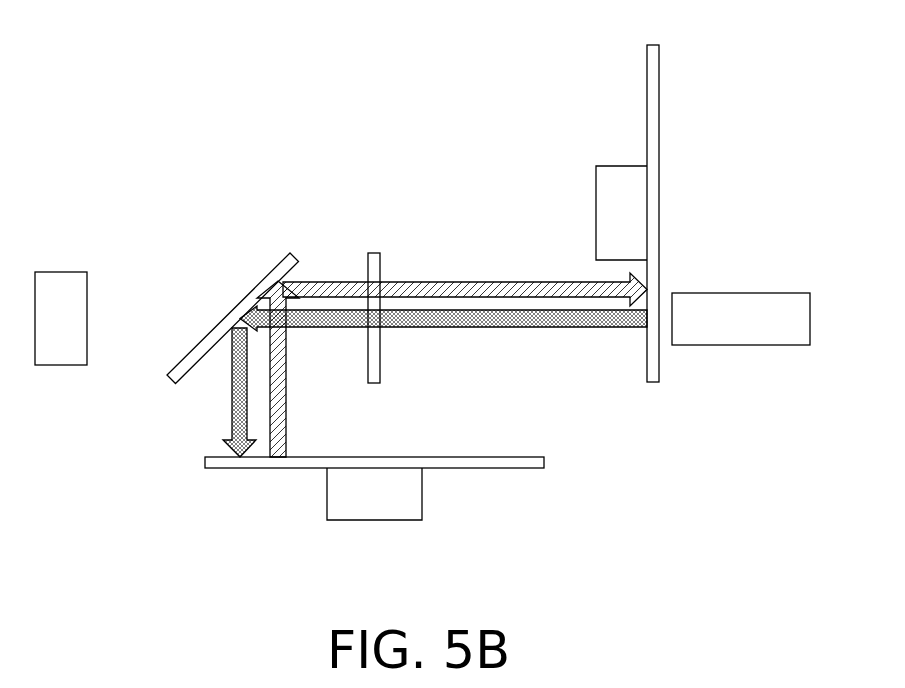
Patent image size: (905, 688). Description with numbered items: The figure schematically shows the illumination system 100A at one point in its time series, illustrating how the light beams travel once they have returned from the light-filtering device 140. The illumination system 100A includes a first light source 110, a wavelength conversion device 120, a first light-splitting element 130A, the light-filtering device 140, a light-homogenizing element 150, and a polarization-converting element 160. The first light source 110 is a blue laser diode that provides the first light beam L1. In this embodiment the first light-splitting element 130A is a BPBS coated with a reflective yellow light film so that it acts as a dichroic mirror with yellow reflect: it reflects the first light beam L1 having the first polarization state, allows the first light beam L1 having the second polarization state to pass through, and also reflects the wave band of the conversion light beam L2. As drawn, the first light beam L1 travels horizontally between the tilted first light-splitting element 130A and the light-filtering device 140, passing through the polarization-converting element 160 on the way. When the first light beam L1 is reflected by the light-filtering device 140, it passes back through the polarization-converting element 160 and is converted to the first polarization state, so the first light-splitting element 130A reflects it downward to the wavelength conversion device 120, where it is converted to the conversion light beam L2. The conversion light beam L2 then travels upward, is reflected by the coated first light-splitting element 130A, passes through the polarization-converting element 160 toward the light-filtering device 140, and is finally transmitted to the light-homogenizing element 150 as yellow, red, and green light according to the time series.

The first light source 110 is at (61, 285).
The wavelength conversion device 120 is at (377, 505).
The first light-splitting element 130A is at (293, 253).
The light-filtering device 140 is at (618, 182).
The light-homogenizing element 150 is at (746, 308).
The polarization-converting element 160 is at (373, 262).
The first light beam L1 is at (478, 328).
The conversion light beam L2 is at (288, 395).
The illumination system 100A is at (780, 579).